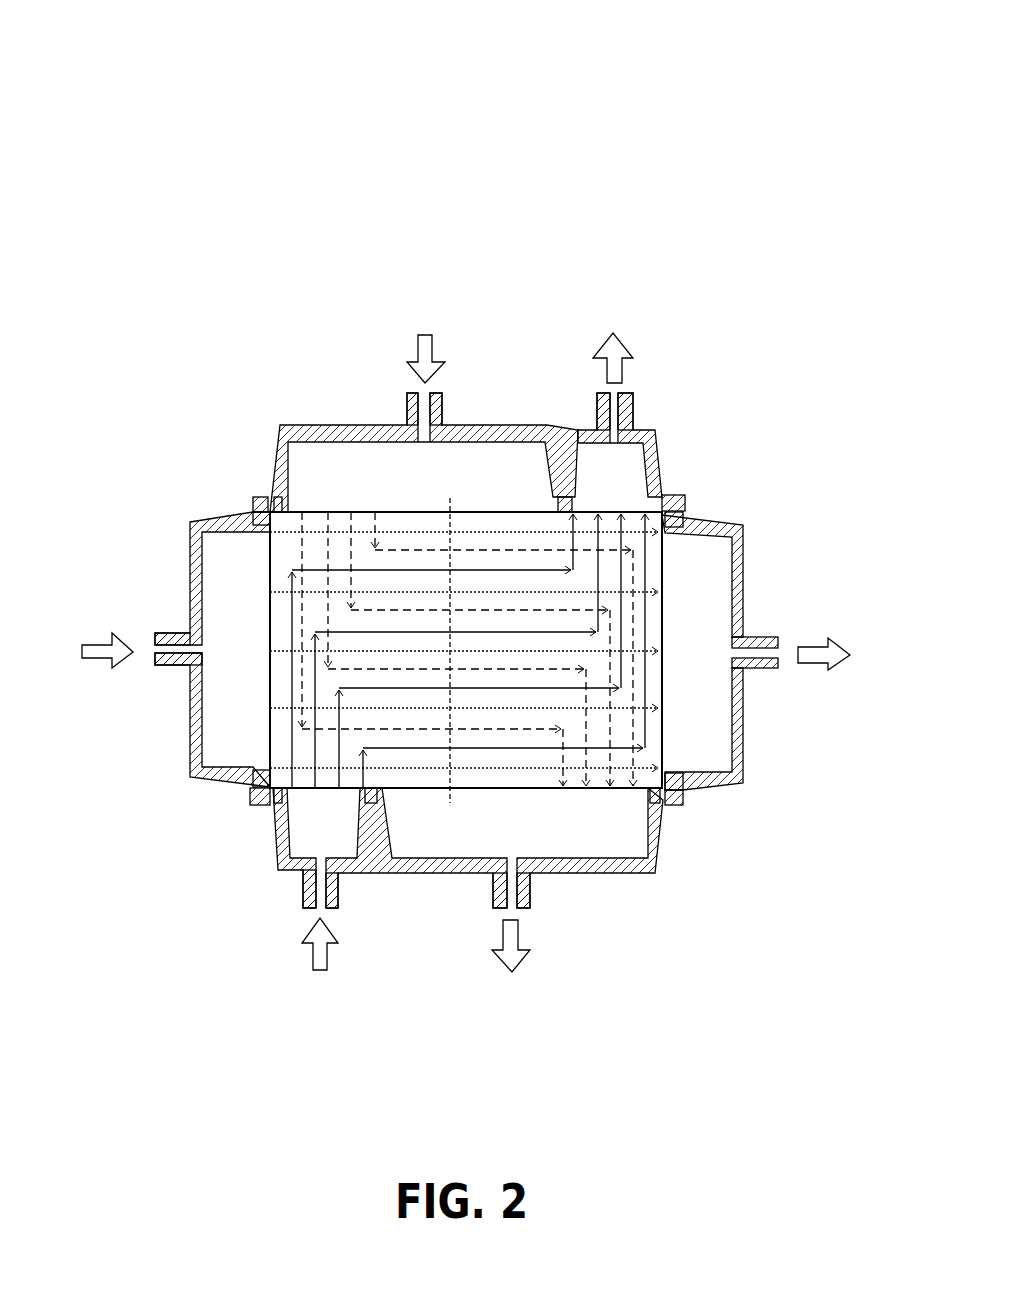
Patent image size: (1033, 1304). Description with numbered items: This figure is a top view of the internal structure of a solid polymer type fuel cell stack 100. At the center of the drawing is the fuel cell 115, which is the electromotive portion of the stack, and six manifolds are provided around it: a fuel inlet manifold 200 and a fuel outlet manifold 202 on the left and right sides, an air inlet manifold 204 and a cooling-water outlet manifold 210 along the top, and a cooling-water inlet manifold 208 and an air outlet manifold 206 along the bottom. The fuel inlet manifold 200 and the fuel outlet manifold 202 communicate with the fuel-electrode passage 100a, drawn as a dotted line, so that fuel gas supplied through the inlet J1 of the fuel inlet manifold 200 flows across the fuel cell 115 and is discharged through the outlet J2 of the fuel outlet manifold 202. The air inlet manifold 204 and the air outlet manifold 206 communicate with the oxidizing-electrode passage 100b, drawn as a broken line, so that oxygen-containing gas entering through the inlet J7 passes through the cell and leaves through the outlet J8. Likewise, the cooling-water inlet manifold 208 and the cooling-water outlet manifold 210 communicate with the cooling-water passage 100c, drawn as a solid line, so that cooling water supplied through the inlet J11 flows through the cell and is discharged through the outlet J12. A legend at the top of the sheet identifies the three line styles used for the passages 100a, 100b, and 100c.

The fuel cell stack 100 is at (456, 262).
The fuel-electrode passage 100a is at (395, 28).
The oxidizing-electrode passage 100b is at (395, 60).
The cooling-water passage 100c is at (395, 92).
The fuel cell 115 is at (260, 560).
The fuel inlet manifold 200 is at (196, 750).
The fuel outlet manifold 202 is at (748, 568).
The air inlet manifold 204 is at (283, 428).
The air outlet manifold 206 is at (655, 875).
The cooling-water inlet manifold 208 is at (272, 845).
The cooling-water outlet manifold 210 is at (660, 443).
The inlet J1 is at (188, 662).
The outlet J2 is at (780, 638).
The inlet J7 is at (442, 398).
The outlet J8 is at (530, 900).
The inlet J11 is at (300, 896).
The outlet J12 is at (640, 403).